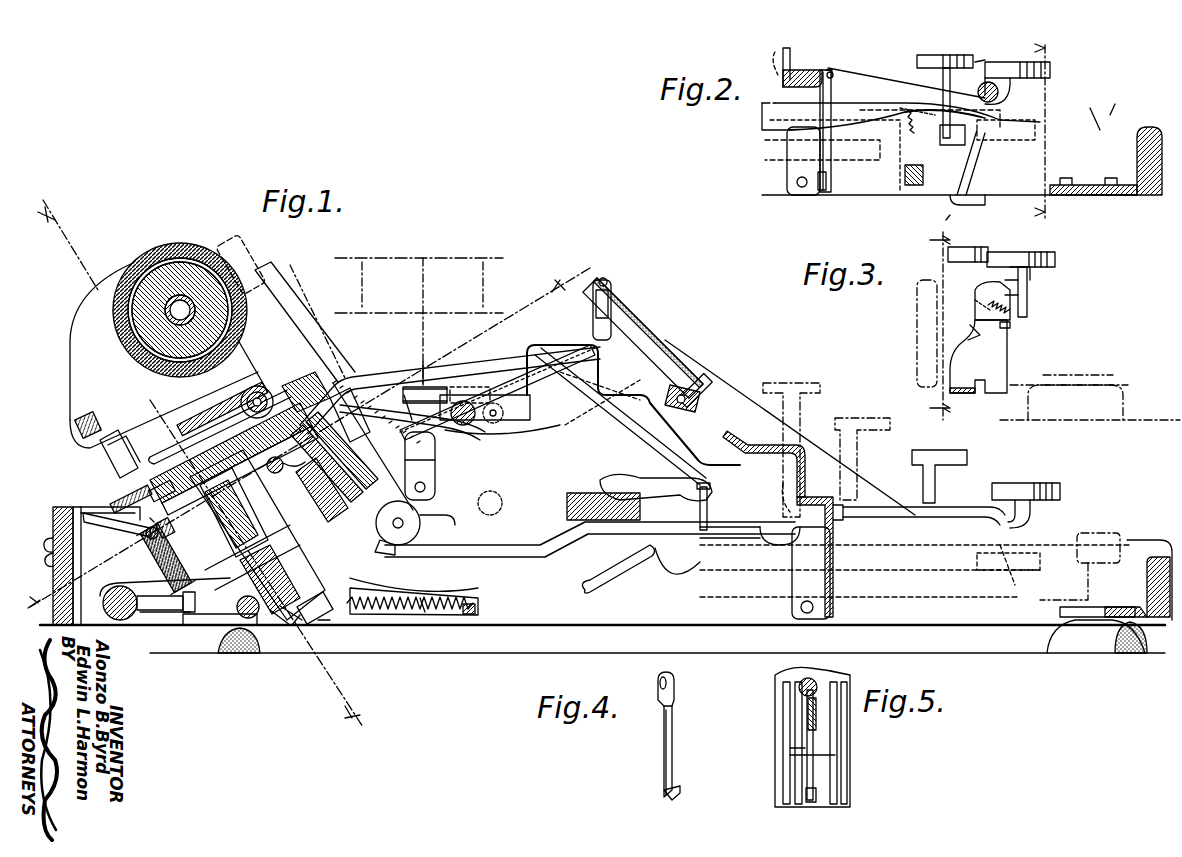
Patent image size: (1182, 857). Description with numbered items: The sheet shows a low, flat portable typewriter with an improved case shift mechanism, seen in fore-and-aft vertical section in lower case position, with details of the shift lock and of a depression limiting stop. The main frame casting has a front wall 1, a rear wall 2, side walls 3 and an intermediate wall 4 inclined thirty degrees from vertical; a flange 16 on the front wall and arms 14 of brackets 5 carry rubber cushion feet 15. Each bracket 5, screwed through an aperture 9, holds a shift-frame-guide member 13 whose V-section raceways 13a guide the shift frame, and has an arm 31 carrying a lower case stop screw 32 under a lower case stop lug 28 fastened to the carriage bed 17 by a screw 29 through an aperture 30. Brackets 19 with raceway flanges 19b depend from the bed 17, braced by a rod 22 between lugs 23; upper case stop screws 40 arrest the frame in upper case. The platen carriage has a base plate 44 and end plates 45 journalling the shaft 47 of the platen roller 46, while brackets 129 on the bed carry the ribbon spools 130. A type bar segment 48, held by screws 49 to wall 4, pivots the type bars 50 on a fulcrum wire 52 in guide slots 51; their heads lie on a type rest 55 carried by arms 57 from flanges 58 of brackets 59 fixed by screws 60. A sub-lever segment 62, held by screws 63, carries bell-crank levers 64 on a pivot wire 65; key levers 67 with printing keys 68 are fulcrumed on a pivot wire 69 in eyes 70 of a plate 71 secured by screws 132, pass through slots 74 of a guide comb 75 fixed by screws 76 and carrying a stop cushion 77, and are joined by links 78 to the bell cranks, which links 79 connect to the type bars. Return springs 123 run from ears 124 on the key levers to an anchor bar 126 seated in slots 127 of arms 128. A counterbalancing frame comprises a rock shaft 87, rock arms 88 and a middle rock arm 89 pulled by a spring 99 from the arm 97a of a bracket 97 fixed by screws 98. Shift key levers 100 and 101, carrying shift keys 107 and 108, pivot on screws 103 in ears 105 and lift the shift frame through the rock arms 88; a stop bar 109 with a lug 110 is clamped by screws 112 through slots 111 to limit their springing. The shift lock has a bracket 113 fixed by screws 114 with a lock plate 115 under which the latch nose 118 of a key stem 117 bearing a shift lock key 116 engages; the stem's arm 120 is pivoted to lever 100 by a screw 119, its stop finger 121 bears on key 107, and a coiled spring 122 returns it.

In FIG. 1, the front wall 1 is at (1145, 555).
In FIG. 1, the rear wall 2 is at (52, 516).
In FIG. 1, the side walls 3 is at (1035, 612).
In FIG. 1, the intermediate wall 4 is at (334, 415).
In FIG. 1, the brackets 5 is at (251, 535).
In FIG. 1, the aperture 9 is at (195, 458).
In FIG. 1, the shift-frame-guide member 13 is at (299, 439).
In FIG. 1, the raceways 13a is at (212, 415).
In FIG. 1, the arm 14 is at (322, 445).
In FIG. 1, the rubber cushion foot 15 is at (240, 653).
In FIG. 1, the flange 16 is at (230, 448).
In FIG. 1, the carriage bed 17 is at (168, 450).
In FIG. 1, the brackets 19 is at (285, 628).
In FIG. 1, the raceway flange 19b is at (300, 640).
In FIG. 1, the rod 22 is at (228, 626).
In FIG. 1, the lugs 23 is at (237, 604).
In FIG. 1, the lower case stop lug 28 is at (152, 492).
In FIG. 1, the fastening screw 29 is at (168, 512).
In FIG. 1, the aperture 30 is at (236, 546).
In FIG. 1, the arm 31 is at (130, 524).
In FIG. 1, the lower case stop screws 32 is at (118, 500).
In FIG. 1, the upper case stop screws 40 is at (312, 620).
In FIG. 1, the base plate 44 is at (250, 356).
In FIG. 1, the end plates 45 is at (72, 345).
In FIG. 1, the platen roller 46 is at (160, 250).
In FIG. 1, the shaft 47 is at (185, 300).
In FIG. 1, the type bar segment 48 is at (375, 412).
In FIG. 1, the screws 49 is at (330, 356).
In FIG. 1, the type bars 50 is at (300, 254).
In FIG. 1, the guide slots 51 is at (405, 470).
In FIG. 1, the fulcrum wire 52 is at (405, 522).
In FIG. 1, the type rest 55 is at (640, 335).
In FIG. 1, the arms 57 is at (593, 318).
In FIG. 1, the flanges 58 is at (440, 372).
In FIG. 1, the brackets 59 is at (418, 386).
In FIG. 1, the screws 60 is at (464, 426).
In FIG. 1, the sub-lever segment 62 is at (560, 522).
In FIG. 1, the screws 63 is at (495, 498).
In FIG. 1, the bell-crank levers 64 is at (612, 400).
In FIG. 1, the pivot wire 65 is at (672, 562).
In FIG. 1, the key levers 67 is at (523, 558).
In FIG. 1, the printing keys 68 is at (790, 383).
In FIG. 1, the pivot wire 69 is at (305, 488).
In FIG. 1, the eyes 70 is at (267, 465).
In FIG. 1, the plate 71 is at (300, 385).
In FIG. 2, the slots 74 is at (785, 165).
In FIG. 1, the guide comb 75 is at (760, 448).
In FIG. 1, the screws 76 is at (800, 606).
In FIG. 1, the key-lever stop cushion 77 is at (818, 496).
In FIG. 1, the links 78 is at (710, 500).
In FIG. 1, the links 79 is at (478, 556).
In FIG. 1, the rock shaft 87 is at (118, 620).
In FIG. 1, the rock arms 88 is at (250, 570).
In FIG. 1, the rock arm 89 is at (155, 614).
In FIG. 1, the bracket 97 is at (46, 563).
In FIG. 1, the arm 97a is at (150, 548).
In FIG. 1, the screws 98 is at (45, 543).
In FIG. 1, the counterbalancing spring 99 is at (152, 562).
In FIG. 2, the shift key lever 100 is at (868, 100).
In FIG. 1, the shift key lever 101 is at (952, 535).
In FIG. 1, the pivot screws 103 is at (478, 428).
In FIG. 1, the ears 105 is at (470, 382).
In FIG. 2, the shift key 107 is at (1050, 68).
In FIG. 1, the shift key 108 is at (1000, 483).
In FIG. 1, the strip or bar 109 is at (880, 548).
In FIG. 2, the lug 110 is at (818, 186).
In FIG. 2, the slots 111 is at (834, 65).
In FIG. 1, the clamping screws 112 is at (845, 510).
In FIG. 2, the bracket 113 is at (1000, 195).
In FIG. 2, the screws 114 is at (1075, 180).
In FIG. 2, the lock plate 115 is at (978, 200).
In FIG. 2, the shift lock key 116 is at (946, 55).
In FIG. 2, the key stem 117 is at (920, 100).
In FIG. 2, the latch nose 118 is at (930, 140).
In FIG. 2, the screw 119 is at (1000, 92).
In FIG. 3, the arm 120 is at (1030, 300).
In FIG. 2, the stop finger 121 is at (980, 60).
In FIG. 2, the coiled spring 122 is at (900, 110).
In FIG. 1, the return springs 123 is at (395, 616).
In FIG. 1, the ears 124 is at (333, 624).
In FIG. 1, the anchor bar 126 is at (470, 616).
In FIG. 1, the slots 127 is at (480, 600).
In FIG. 1, the arms 128 is at (428, 616).
In FIG. 1, the brackets 129 is at (365, 370).
In FIG. 1, the ribbon spools 130 is at (358, 310).
In FIG. 1, the fastening screws 132 is at (385, 548).